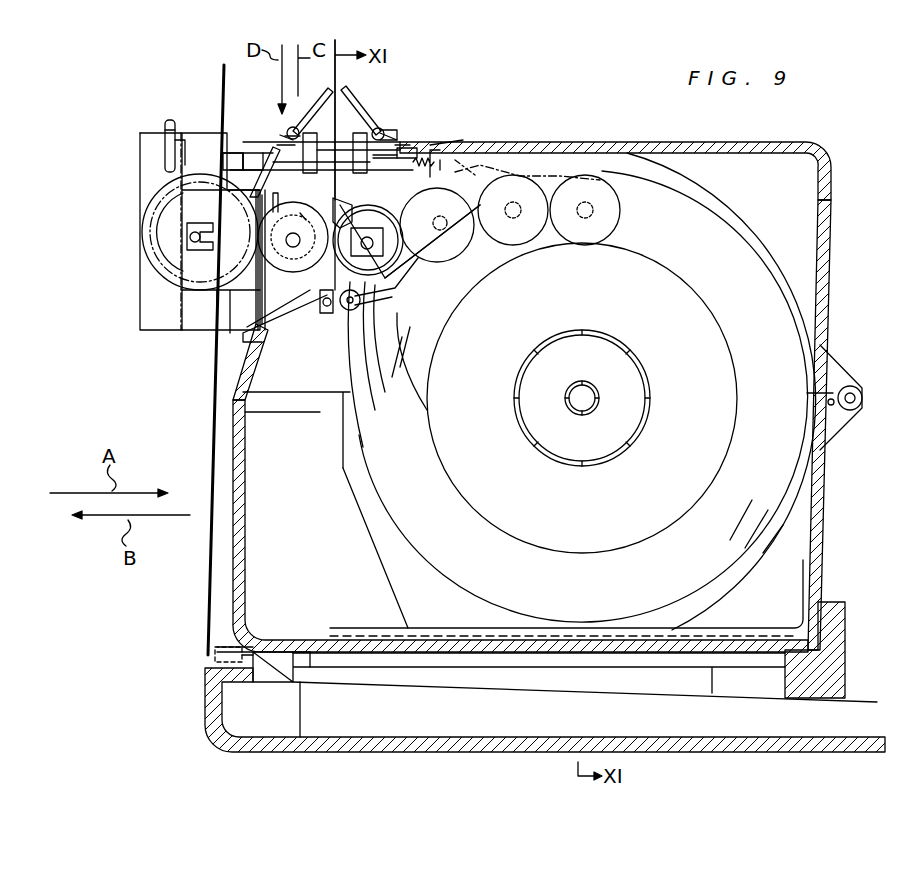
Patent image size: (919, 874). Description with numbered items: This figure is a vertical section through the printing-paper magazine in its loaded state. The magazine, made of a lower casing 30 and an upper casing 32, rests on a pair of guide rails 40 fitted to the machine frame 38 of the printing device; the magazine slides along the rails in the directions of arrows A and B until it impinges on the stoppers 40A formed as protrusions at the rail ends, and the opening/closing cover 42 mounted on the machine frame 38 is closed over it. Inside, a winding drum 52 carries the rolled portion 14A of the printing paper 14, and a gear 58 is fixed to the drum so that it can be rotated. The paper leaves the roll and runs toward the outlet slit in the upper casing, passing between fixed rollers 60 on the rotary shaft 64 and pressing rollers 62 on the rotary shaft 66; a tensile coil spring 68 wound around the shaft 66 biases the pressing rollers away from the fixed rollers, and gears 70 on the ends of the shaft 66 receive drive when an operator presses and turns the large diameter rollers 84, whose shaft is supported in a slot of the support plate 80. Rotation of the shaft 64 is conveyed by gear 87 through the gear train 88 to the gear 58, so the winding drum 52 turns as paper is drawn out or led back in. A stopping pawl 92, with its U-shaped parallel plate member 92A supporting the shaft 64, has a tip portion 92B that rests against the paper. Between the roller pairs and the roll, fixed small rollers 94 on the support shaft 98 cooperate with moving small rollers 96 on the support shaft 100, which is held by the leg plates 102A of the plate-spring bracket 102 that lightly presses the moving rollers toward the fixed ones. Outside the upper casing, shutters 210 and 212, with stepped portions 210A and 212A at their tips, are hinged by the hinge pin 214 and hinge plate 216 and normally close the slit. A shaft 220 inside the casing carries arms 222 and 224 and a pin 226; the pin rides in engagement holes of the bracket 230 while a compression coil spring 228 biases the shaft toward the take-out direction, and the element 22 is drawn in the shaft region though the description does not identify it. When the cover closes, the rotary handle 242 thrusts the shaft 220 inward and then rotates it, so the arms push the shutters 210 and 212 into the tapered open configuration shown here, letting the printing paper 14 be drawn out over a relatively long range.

The printing paper 14 is at (348, 40).
The rolled portion 14A is at (713, 218).
The shaft assembly 22 is at (296, 213).
The lower casing 30 is at (820, 555).
The upper casing 32 is at (830, 273).
The machine frame 38 is at (492, 753).
The guide rails 40 is at (602, 665).
The stoppers 40A is at (842, 622).
The opening/closing cover 42 is at (204, 633).
The winding drum 52 is at (627, 342).
The gear 58 is at (663, 263).
The fixed rollers 60 is at (457, 264).
The pressing rollers 62 is at (262, 297).
The rotary shaft 64 is at (417, 252).
The rotary shaft 66 is at (293, 232).
The tensile coil spring 68 is at (295, 254).
The gears 70 is at (322, 293).
The support plate 80 is at (203, 225).
The large diameter rollers 84 is at (146, 177).
The gear 87 is at (415, 286).
The gear train 88 is at (567, 178).
The stopping pawl 92 is at (433, 221).
The parallel plate member 92A is at (403, 253).
The tip portion 92B is at (372, 212).
The fixed small rollers 94 is at (397, 317).
The moving small rollers 96 is at (336, 313).
The support shaft 98 is at (397, 288).
The support shaft 100 is at (293, 313).
The bracket 102 is at (250, 380).
The leg plates 102A is at (253, 337).
The shutter 210 is at (323, 95).
The stepped portion 210A is at (302, 124).
The shutter 212 is at (350, 90).
The stepped portion 212A is at (368, 102).
The hinge pin 214 is at (284, 130).
The hinge plate 216 is at (300, 139).
The shaft 220 is at (350, 203).
The arm 222 is at (314, 204).
The arm 224 is at (412, 208).
The pin 226 is at (422, 142).
The compression coil spring 228 is at (440, 162).
The bracket 230 is at (430, 145).
The rotary handle 242 is at (169, 116).